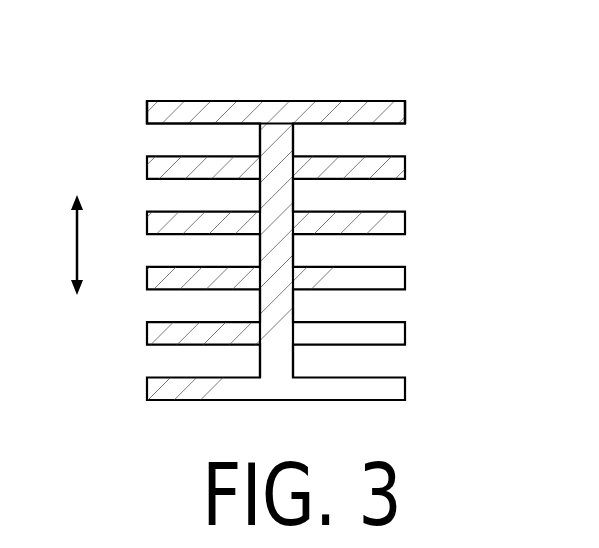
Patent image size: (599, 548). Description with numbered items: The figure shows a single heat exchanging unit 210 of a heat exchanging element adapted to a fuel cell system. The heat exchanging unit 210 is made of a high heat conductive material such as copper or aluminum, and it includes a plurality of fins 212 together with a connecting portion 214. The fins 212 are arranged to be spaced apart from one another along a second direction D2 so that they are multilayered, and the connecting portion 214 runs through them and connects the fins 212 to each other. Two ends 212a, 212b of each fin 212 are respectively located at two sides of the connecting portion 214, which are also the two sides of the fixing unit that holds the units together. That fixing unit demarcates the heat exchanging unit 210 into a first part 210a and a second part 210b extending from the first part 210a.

The heat exchanging unit 210 is at (537, 387).
The first part 210a is at (181, 76).
The second part 210b is at (386, 77).
The fin 212 is at (225, 113).
The end of fin 212a is at (133, 119).
The end of fin 212b is at (419, 119).
The connecting portion 214 is at (285, 143).
The second direction D2 is at (58, 245).